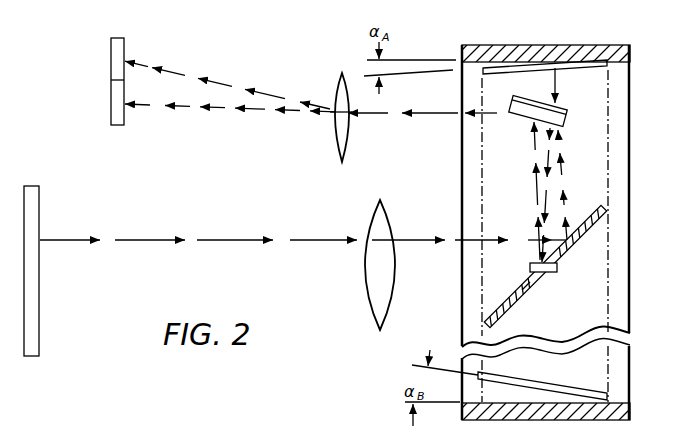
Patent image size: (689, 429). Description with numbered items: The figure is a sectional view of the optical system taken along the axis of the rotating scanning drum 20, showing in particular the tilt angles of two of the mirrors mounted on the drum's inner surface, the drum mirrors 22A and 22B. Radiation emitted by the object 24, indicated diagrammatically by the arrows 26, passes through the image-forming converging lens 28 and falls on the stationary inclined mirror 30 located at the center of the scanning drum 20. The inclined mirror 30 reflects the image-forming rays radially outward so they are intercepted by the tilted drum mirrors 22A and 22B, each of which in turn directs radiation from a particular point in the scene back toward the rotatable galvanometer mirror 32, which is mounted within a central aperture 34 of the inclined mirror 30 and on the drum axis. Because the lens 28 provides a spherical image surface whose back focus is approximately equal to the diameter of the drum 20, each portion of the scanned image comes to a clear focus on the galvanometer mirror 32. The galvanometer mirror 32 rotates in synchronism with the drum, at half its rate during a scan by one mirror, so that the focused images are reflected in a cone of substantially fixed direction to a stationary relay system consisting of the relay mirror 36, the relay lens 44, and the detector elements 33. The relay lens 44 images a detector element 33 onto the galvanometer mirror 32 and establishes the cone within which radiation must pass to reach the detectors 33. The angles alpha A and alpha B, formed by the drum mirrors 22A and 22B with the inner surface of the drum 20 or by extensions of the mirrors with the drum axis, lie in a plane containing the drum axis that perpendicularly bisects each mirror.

The scanning drum 20 is at (609, 50).
The drum mirror 22A is at (558, 70).
The drum mirror 22B is at (553, 368).
The object 24 is at (40, 195).
The arrows 26 is at (230, 240).
The image-forming converging lens 28 is at (383, 312).
The inclined mirror 30 is at (507, 308).
The galvanometer mirror 32 is at (557, 268).
The radiation detector elements 33 is at (117, 126).
The central aperture 34 is at (527, 285).
The relay mirror 36 is at (510, 107).
The relay lens 44 is at (349, 130).